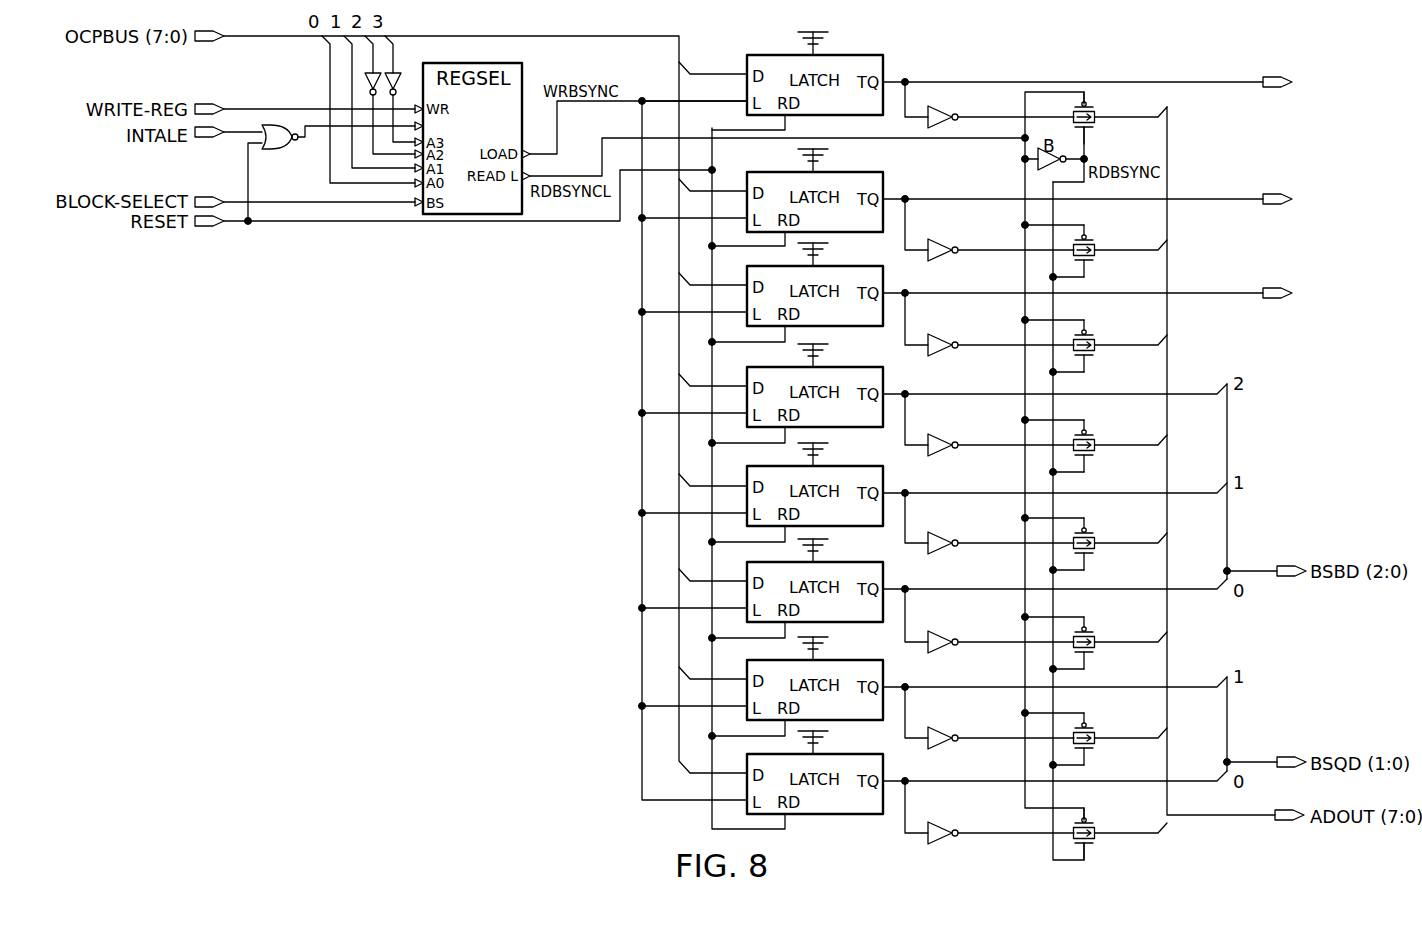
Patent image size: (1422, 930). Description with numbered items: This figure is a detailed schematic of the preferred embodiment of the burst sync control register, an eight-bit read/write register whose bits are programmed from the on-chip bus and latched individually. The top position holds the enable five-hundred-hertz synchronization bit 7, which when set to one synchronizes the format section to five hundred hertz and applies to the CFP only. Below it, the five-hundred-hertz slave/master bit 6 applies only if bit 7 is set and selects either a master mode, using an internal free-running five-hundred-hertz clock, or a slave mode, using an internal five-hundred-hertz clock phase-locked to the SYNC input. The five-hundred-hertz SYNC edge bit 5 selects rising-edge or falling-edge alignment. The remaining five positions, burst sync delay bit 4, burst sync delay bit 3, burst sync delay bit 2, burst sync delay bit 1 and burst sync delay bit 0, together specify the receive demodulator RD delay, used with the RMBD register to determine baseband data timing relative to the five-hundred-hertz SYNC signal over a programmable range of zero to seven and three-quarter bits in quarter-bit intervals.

The enable 500 Hz synchronization bit 7 is at (1023, 88).
The 500 Hz slave/master bit 6 is at (1014, 214).
The 500 Hz SYNC edge bit 5 is at (1014, 309).
The burst sync delay bit 4 is at (933, 409).
The burst sync delay bit 3 is at (933, 508).
The burst sync delay bit 2 is at (933, 605).
The burst sync delay bit 1 is at (933, 702).
The burst sync delay bit 0 is at (943, 796).